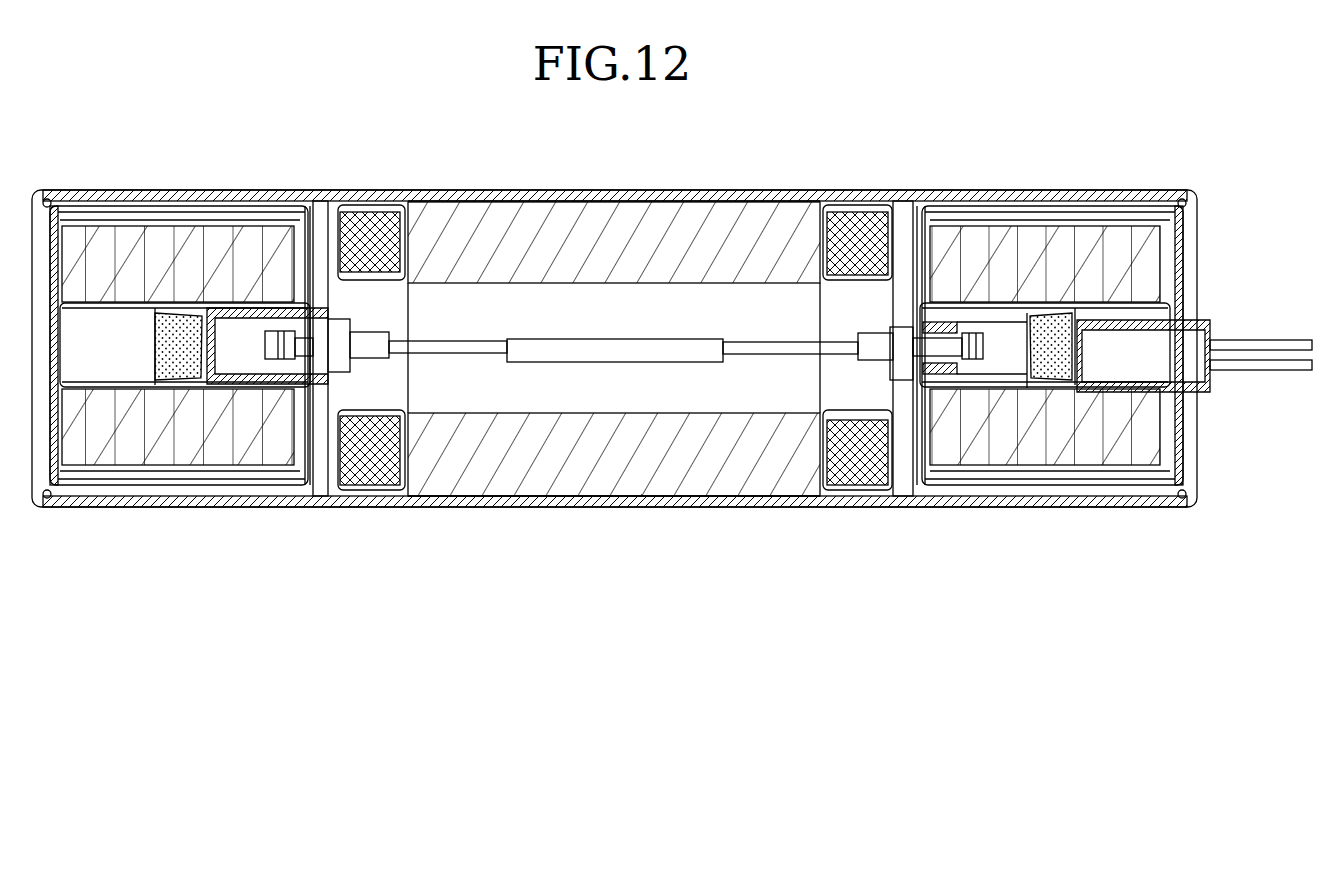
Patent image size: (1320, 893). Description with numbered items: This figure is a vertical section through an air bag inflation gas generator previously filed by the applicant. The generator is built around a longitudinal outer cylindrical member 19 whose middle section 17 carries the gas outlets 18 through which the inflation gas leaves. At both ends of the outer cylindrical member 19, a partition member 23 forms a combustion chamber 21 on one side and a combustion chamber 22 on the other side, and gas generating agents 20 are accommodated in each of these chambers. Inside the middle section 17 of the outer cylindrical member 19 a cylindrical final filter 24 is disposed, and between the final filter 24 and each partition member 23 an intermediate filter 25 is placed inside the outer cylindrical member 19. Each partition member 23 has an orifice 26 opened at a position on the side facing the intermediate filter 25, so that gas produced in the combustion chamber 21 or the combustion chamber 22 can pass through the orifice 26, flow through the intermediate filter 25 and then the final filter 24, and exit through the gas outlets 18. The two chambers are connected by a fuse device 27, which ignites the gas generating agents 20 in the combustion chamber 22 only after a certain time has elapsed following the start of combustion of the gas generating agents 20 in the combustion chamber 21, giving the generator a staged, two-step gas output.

The middle section 17 is at (661, 196).
The gas outlets 18 is at (537, 199).
The outer cylindrical member 19 is at (845, 198).
The gas generating agents 20 is at (190, 452).
The combustion chamber 21 is at (197, 195).
The combustion chamber 22 is at (1052, 200).
The partition member 23 is at (323, 210).
The final filter 24 is at (652, 462).
The intermediate filter 25 is at (383, 458).
The orifice 26 is at (915, 203).
The fuse device 27 is at (690, 368).